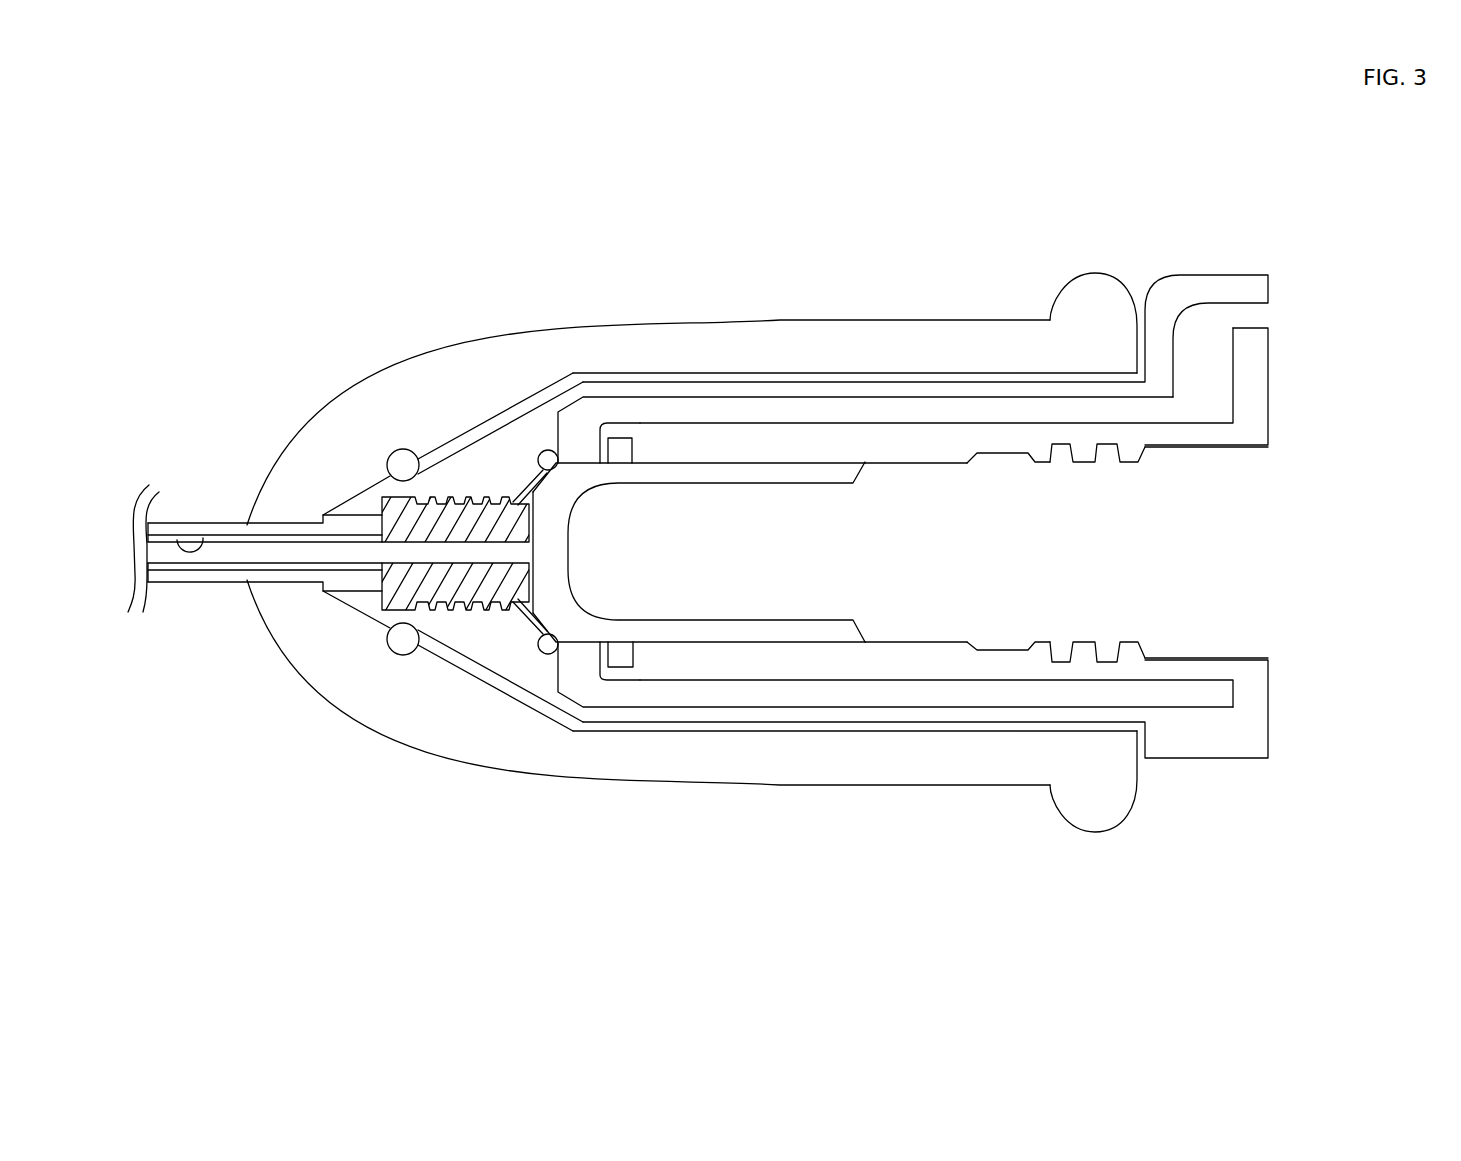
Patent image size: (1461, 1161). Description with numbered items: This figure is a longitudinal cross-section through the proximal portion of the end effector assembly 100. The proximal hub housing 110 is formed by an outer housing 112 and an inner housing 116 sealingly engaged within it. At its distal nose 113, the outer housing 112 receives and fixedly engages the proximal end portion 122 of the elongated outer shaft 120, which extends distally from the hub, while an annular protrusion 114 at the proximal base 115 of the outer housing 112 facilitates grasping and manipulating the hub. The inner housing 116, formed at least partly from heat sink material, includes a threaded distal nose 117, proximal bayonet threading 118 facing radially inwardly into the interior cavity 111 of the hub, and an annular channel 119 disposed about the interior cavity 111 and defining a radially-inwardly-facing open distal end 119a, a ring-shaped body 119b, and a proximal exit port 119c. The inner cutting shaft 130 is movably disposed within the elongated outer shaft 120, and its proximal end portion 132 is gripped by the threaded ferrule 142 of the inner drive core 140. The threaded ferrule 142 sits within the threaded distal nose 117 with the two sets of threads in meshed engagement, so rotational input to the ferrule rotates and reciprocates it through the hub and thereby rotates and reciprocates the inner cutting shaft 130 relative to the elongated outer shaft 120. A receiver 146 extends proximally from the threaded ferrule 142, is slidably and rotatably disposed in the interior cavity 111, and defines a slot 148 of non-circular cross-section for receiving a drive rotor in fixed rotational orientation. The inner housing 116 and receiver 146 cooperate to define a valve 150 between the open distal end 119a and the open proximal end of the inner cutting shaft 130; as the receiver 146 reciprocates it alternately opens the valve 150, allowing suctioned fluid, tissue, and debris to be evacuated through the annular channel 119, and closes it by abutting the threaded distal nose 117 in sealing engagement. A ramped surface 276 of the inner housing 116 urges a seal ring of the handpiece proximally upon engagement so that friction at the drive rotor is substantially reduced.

The end effector assembly 100 is at (670, 164).
The proximal hub housing 110 is at (484, 328).
The interior cavity 111 is at (840, 557).
The outer housing 112 is at (759, 345).
The distal nose 113 is at (290, 490).
The annular protrusion 114 is at (1094, 300).
The proximal base 115 is at (1032, 357).
The inner housing 116 is at (877, 392).
The threaded distal nose 117 is at (488, 470).
The proximal bayonet threading 118 is at (1123, 667).
The annular channel 119 is at (933, 413).
The radially-inwardly-facing open distal end 119a is at (573, 444).
The ring-shaped body 119b is at (753, 412).
The proximal exit port 119c is at (1243, 318).
The elongated outer shaft 120 is at (173, 575).
The proximal end portion 122 is at (303, 583).
The inner cutting shaft 130 is at (203, 538).
The proximal end portion 132 is at (512, 556).
The inner drive core 140 is at (683, 563).
The threaded ferrule 142 is at (379, 618).
The receiver 146 is at (569, 617).
The slot 148 is at (617, 563).
The valve 150 is at (522, 625).
The ramped surface 276 is at (968, 462).